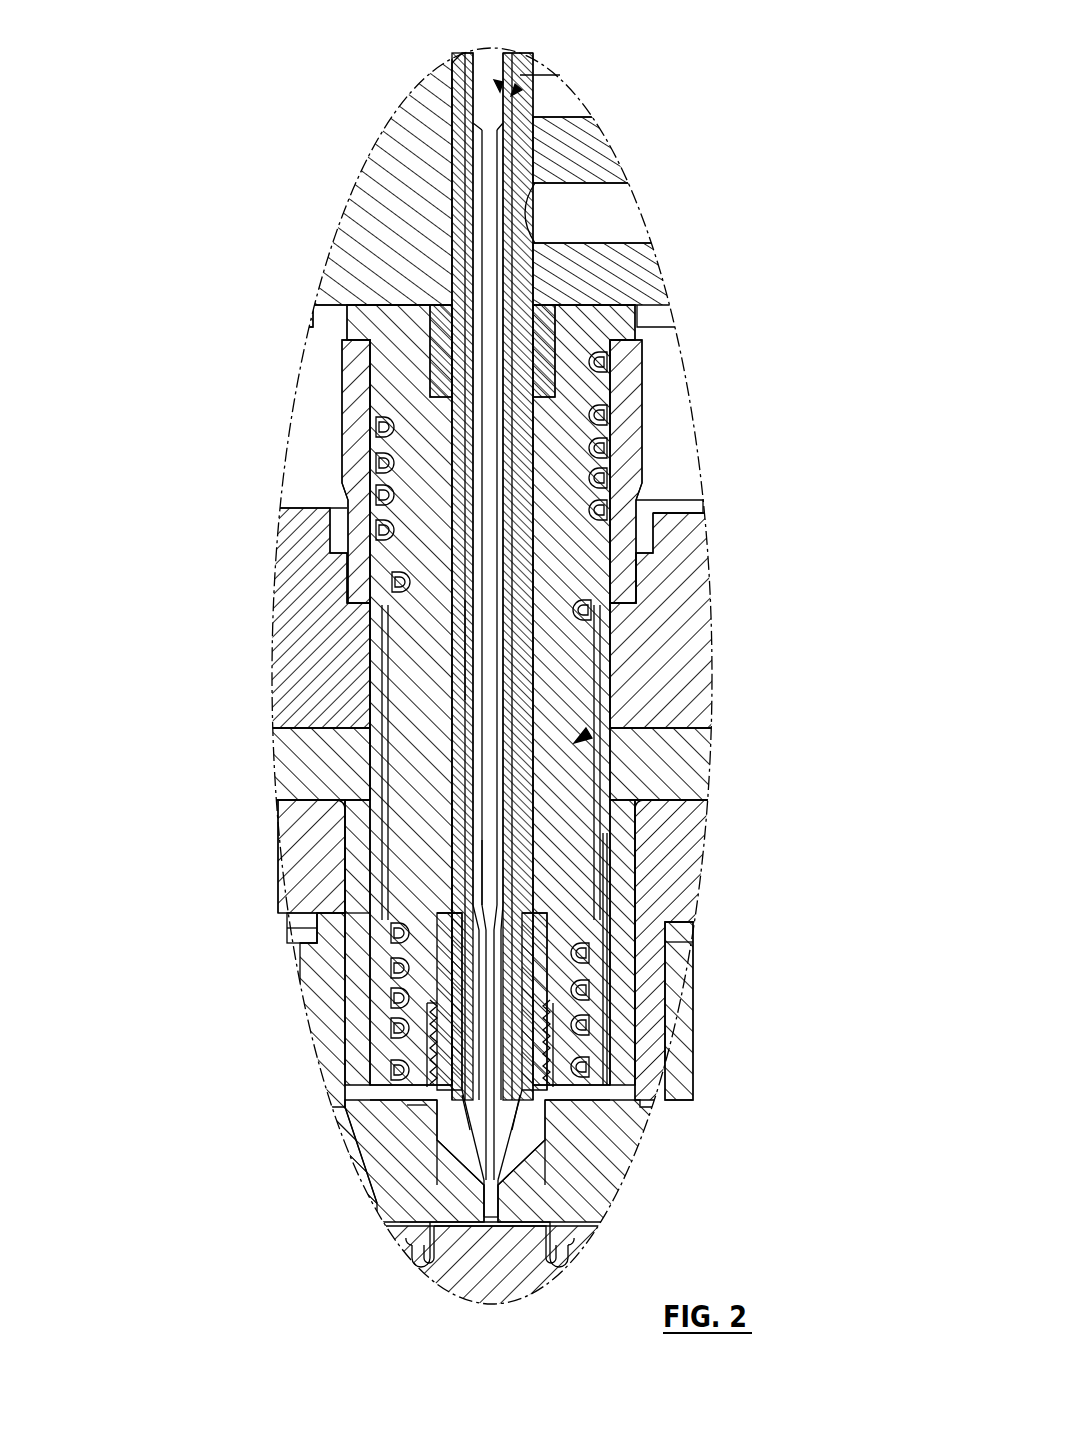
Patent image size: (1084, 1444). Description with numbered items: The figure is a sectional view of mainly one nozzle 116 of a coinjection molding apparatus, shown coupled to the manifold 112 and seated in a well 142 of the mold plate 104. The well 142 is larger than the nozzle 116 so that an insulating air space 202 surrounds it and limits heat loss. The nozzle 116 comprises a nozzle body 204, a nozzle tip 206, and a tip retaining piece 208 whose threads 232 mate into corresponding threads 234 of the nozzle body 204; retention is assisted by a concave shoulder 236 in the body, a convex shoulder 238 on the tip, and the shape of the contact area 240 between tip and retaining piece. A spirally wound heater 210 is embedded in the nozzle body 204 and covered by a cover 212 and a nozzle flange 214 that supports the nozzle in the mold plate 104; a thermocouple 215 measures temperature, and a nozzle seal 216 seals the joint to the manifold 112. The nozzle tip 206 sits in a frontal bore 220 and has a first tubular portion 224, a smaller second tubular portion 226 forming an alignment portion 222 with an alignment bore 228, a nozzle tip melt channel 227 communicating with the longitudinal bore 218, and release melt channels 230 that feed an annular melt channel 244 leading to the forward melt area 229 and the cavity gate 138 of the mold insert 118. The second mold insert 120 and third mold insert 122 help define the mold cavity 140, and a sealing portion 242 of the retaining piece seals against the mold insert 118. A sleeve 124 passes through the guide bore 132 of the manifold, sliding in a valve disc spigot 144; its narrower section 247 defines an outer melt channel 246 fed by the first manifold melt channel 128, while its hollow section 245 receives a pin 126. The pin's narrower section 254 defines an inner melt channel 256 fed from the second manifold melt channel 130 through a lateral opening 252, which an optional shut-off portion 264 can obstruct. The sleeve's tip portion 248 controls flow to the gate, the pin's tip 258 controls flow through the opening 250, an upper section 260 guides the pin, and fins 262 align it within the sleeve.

The mold plate 104 is at (700, 662).
The manifold 112 is at (385, 177).
The nozzle 116 is at (700, 692).
The mold insert 118 is at (695, 785).
The second mold insert 120 is at (682, 830).
The third mold insert 122 is at (668, 948).
The sleeve 124 is at (473, 900).
The pin 126 is at (440, 845).
The first manifold melt channel 128 is at (622, 216).
The second manifold melt channel 130 is at (565, 95).
The guide bore 132 is at (452, 133).
The cavity gate 138 is at (488, 1232).
The mold cavity 140 is at (537, 1272).
The well 142 is at (690, 492).
The valve disc spigot 144 is at (462, 105).
The insulating air space 202 is at (655, 640).
The nozzle body 204 is at (590, 736).
The nozzle tip 206 is at (425, 1045).
The tip retaining piece 208 is at (385, 1112).
The heater 210 is at (635, 398).
The cover 212 is at (618, 765).
The nozzle flange 214 is at (630, 430).
The thermocouple 215 is at (608, 885).
The nozzle seal 216 is at (600, 310).
The longitudinal bore 218 is at (435, 745).
The frontal bore 220 is at (435, 955).
The alignment portion 222 is at (465, 1152).
The first tubular portion 224 is at (440, 1012).
The second tubular portion 226 is at (425, 1135).
The nozzle tip melt channel 227 is at (660, 998).
The alignment bore 228 is at (440, 1192).
The forward melt area 229 is at (412, 1232).
The release melt channel 230 is at (545, 1132).
The threads 232 is at (598, 1058).
The threads 234 is at (590, 1062).
The concave shoulder 236 is at (610, 932).
The convex shoulder 238 is at (590, 938).
The contact area 240 is at (605, 1030).
The sealing portion 242 is at (545, 1190).
The annular melt channel 244 is at (540, 1145).
The hollow section 245 is at (395, 935).
The outer melt channel 246 is at (400, 630).
The narrower section 247 is at (385, 905).
The tip portion 248 is at (562, 1224).
The opening 250 is at (572, 1250).
The lateral opening 252 is at (517, 89).
The narrower section 254 is at (482, 858).
The inner melt channel 256 is at (475, 655).
The tip 258 is at (472, 1278).
The upper section 260 is at (475, 80).
The fin 262 is at (625, 612).
The shut-off portion 264 is at (498, 86).